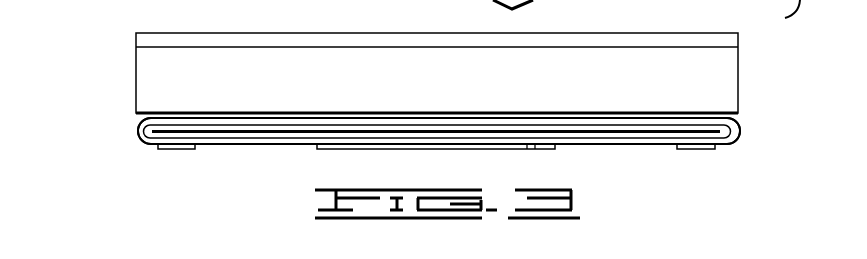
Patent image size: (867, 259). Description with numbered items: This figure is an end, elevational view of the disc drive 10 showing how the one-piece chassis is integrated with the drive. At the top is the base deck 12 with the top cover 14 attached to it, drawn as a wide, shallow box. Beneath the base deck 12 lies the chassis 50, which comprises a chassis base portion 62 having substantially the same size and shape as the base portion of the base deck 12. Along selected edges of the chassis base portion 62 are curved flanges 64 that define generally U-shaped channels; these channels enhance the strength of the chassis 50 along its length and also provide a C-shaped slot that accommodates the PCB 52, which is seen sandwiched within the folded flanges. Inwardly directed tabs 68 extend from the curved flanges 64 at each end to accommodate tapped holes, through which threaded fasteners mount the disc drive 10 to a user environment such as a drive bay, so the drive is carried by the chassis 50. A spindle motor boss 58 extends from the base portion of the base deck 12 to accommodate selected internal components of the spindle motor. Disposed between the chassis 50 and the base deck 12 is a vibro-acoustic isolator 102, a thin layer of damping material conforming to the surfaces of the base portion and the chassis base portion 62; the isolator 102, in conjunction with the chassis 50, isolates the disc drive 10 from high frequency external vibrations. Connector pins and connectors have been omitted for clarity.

The disc drive 10 is at (96, 42).
The base deck 12 is at (155, 70).
The top cover 14 is at (298, 33).
The chassis 50 is at (127, 121).
The PCB 52 is at (222, 145).
The spindle motor boss 58 is at (440, 147).
The chassis base portion 62 is at (581, 122).
The curved flanges 64 is at (137, 137).
The tabs 68 is at (190, 150).
The vibro-acoustic isolator 102 is at (419, 109).